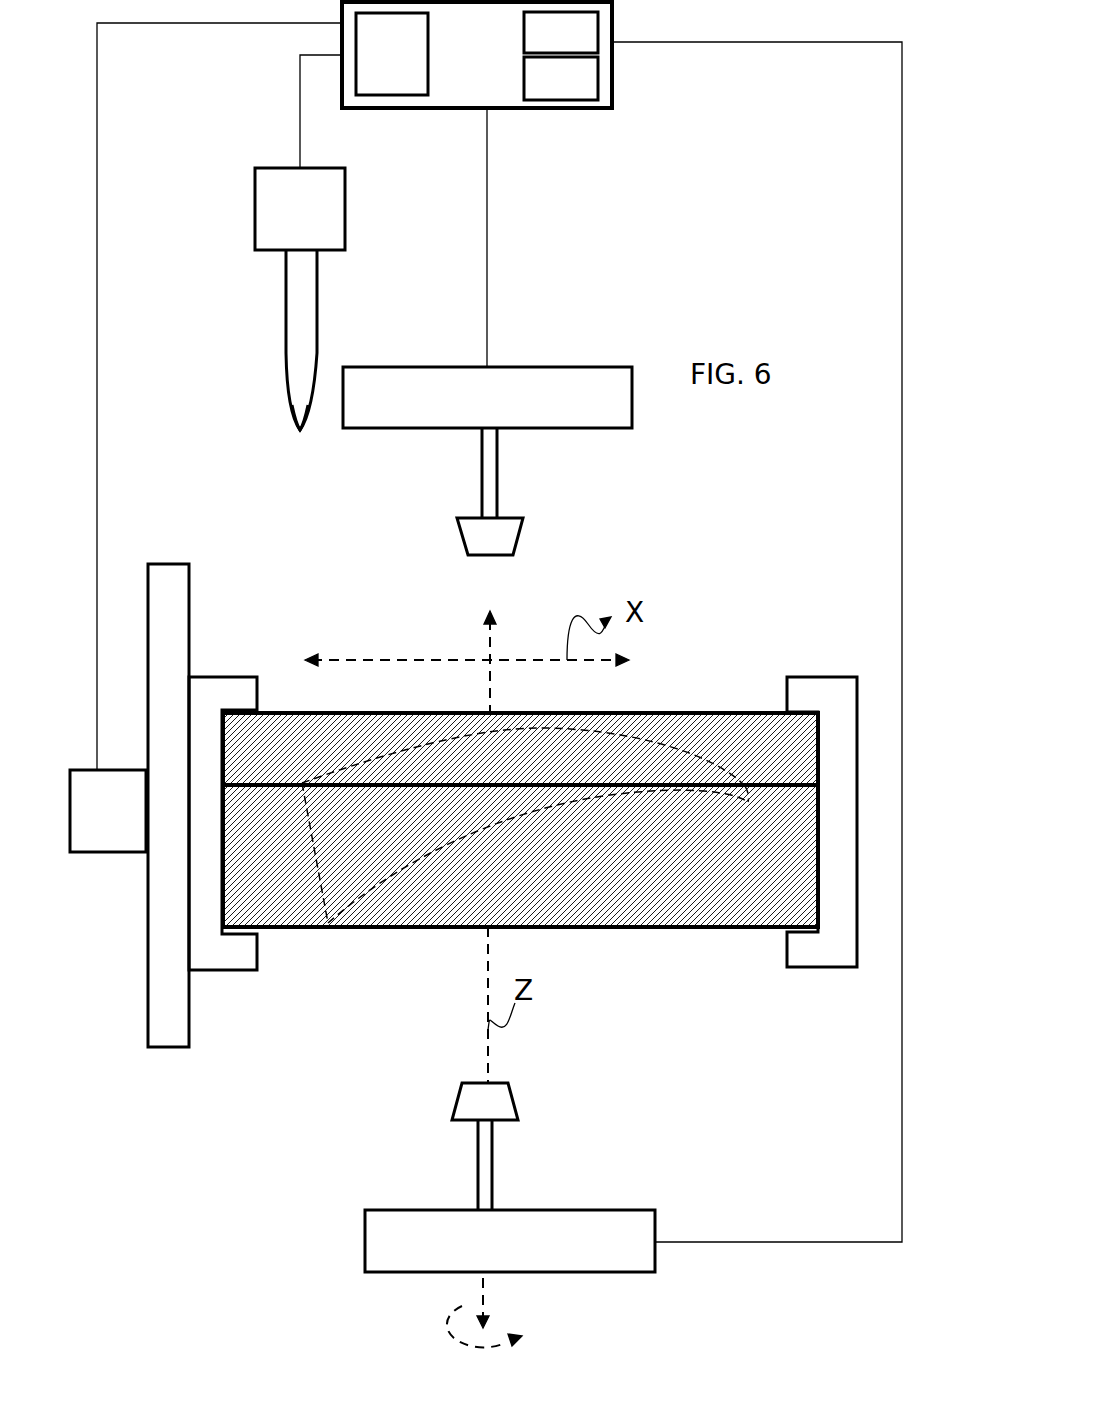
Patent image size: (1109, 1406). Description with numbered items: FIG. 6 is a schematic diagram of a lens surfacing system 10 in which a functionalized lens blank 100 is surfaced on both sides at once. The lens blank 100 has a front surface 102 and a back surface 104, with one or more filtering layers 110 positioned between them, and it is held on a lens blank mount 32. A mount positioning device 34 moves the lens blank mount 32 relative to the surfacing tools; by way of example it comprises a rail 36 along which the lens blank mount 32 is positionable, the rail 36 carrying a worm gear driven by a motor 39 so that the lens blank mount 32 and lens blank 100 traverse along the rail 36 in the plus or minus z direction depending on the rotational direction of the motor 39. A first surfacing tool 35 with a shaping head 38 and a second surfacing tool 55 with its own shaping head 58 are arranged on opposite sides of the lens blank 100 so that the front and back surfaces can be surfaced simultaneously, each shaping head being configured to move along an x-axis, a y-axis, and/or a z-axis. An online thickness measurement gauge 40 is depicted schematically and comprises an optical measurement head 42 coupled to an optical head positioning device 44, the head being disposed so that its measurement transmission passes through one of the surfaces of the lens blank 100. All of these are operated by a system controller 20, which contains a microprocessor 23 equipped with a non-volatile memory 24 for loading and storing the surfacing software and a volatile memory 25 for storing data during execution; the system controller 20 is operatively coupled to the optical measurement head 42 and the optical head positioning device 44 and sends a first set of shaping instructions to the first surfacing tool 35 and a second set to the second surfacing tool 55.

The system 10 is at (892, 10).
The system controller 20 is at (477, 55).
The microprocessor 23 is at (561, 32).
The non-volatile memory 24 is at (392, 54).
The volatile memory 25 is at (561, 78).
The optical head positioning device 44 is at (300, 209).
The online thickness measurement gauge 40 is at (301, 340).
The optical measurement head 42 is at (300, 430).
The surfacing tool 35 is at (463, 430).
The shaping head 38 is at (475, 557).
The front surface 102 is at (298, 713).
The filtering layer 110 is at (697, 785).
The rail 36 is at (168, 805).
The motor 39 is at (108, 811).
The mount positioning device 34 is at (110, 887).
The back surface 104 is at (277, 927).
The lens blank 100 is at (677, 927).
The lens blank mount 32 is at (820, 968).
The shaping head 58 is at (462, 1120).
The second surfacing tool 55 is at (367, 1240).